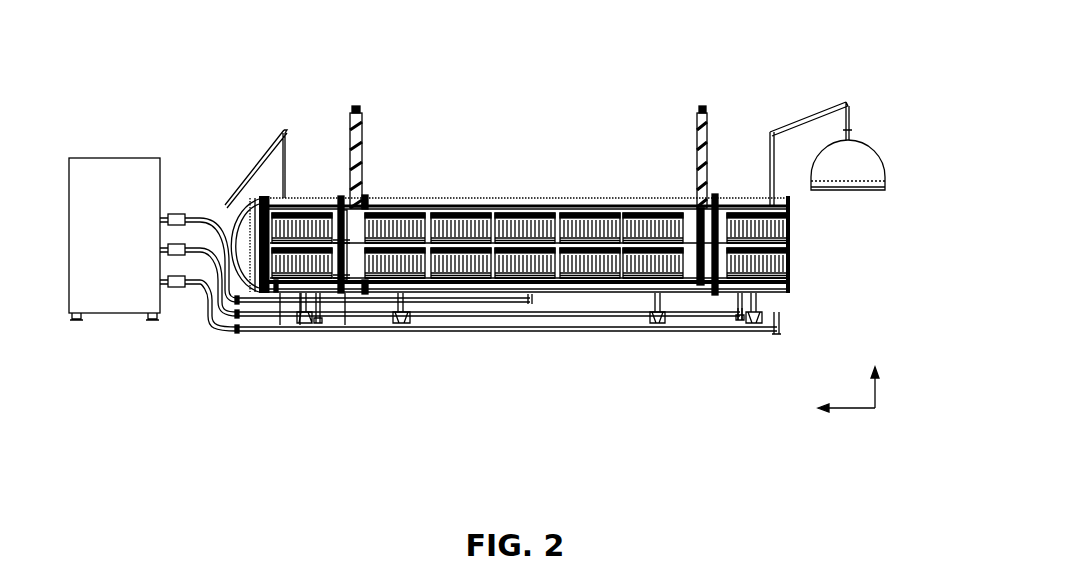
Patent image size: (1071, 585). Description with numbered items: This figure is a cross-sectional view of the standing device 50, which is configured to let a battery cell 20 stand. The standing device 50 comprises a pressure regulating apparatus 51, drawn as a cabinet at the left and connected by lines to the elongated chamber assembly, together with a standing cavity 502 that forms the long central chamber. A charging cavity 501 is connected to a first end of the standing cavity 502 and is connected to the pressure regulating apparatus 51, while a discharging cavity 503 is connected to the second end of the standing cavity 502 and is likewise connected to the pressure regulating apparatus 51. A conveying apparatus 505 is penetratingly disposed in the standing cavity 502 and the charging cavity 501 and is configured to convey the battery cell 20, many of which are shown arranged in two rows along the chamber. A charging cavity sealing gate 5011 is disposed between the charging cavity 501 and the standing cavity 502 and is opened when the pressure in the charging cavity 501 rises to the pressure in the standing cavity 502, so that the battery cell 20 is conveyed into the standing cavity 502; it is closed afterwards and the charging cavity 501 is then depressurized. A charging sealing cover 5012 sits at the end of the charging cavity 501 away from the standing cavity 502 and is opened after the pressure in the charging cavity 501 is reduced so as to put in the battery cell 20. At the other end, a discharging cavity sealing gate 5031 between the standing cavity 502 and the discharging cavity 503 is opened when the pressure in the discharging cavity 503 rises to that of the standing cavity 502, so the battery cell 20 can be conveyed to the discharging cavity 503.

The standing device 50 is at (486, 52).
The pressure regulating apparatus 51 is at (113, 283).
The charging cavity 501 is at (790, 211).
The standing cavity 502 is at (575, 198).
The discharging cavity sealing gate 5031 is at (366, 144).
The charging cavity sealing gate 5011 is at (707, 144).
The charging sealing cover 5012 is at (862, 175).
The battery cell 20 is at (472, 262).
The discharging cavity 503 is at (333, 262).
The conveying apparatus 505 is at (720, 244).